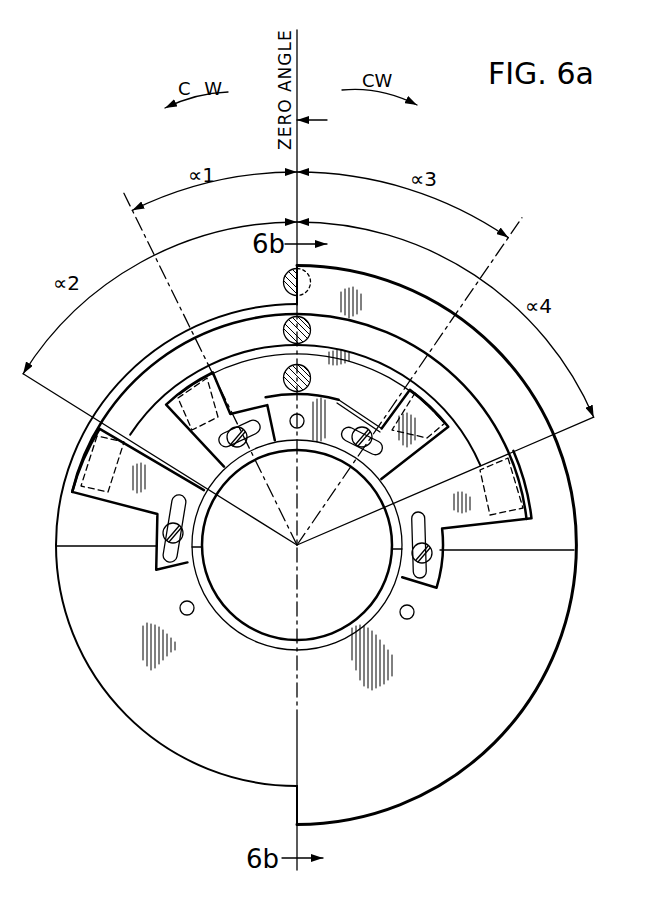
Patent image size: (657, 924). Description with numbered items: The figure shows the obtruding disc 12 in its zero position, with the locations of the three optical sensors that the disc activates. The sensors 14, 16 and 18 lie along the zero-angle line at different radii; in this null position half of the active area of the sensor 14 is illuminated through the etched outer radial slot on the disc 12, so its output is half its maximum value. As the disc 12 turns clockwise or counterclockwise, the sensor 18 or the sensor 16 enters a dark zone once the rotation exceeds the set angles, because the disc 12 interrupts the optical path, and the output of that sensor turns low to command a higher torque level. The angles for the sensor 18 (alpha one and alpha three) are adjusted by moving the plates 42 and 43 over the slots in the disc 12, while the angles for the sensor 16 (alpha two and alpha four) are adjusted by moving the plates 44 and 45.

The obtruding disc 12 is at (552, 618).
The sensor 14 is at (283, 283).
The sensor 16 is at (283, 331).
The sensor 18 is at (283, 379).
The plate 42 is at (215, 438).
The plate 43 is at (402, 458).
The plate 44 is at (128, 497).
The plate 45 is at (478, 508).